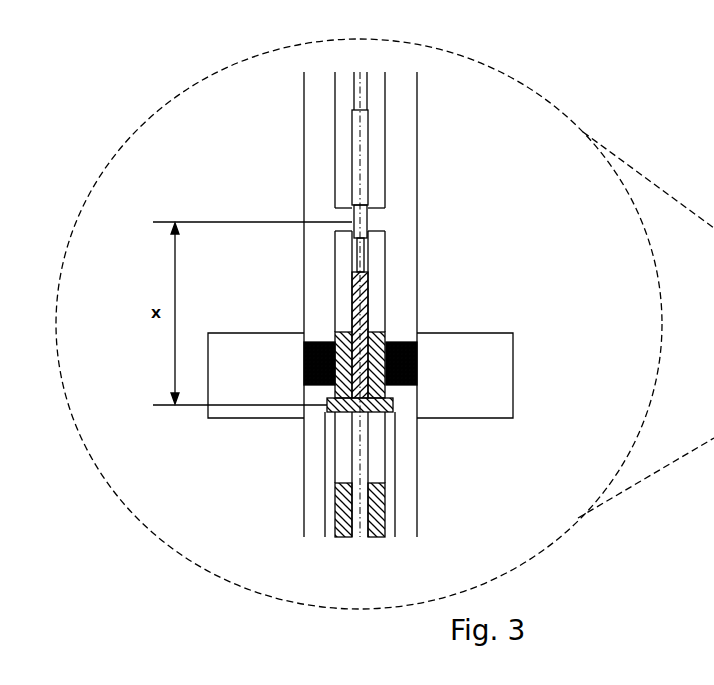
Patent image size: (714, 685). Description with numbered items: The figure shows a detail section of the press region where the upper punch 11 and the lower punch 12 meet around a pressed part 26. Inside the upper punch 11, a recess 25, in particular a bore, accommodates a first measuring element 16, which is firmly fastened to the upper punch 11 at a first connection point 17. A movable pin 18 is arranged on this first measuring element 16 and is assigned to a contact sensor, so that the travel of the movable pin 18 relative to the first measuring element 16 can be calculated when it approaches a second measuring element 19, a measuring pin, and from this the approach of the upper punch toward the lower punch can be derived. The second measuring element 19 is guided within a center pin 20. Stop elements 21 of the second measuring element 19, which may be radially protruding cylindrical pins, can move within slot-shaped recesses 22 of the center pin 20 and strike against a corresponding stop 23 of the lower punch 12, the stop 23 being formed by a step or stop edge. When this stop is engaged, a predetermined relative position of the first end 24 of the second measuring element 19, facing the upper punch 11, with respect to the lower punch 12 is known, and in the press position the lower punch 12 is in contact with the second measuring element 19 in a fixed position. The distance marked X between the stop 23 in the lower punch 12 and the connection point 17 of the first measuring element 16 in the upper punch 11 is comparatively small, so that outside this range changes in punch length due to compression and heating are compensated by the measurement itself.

The upper punch 11 is at (422, 128).
The lower punch 12 is at (415, 508).
The first measuring element 16 is at (368, 177).
The first connection point 17 is at (350, 215).
The movable pin 18 is at (383, 242).
The second measuring element 19 is at (358, 423).
The center pin 20 is at (380, 343).
The stop elements 21 is at (393, 412).
The slot-shaped recesses 22 is at (321, 451).
The stop 23 is at (393, 399).
The first end 24 is at (365, 272).
The recess 25 is at (352, 290).
The pressed part 26 is at (418, 358).